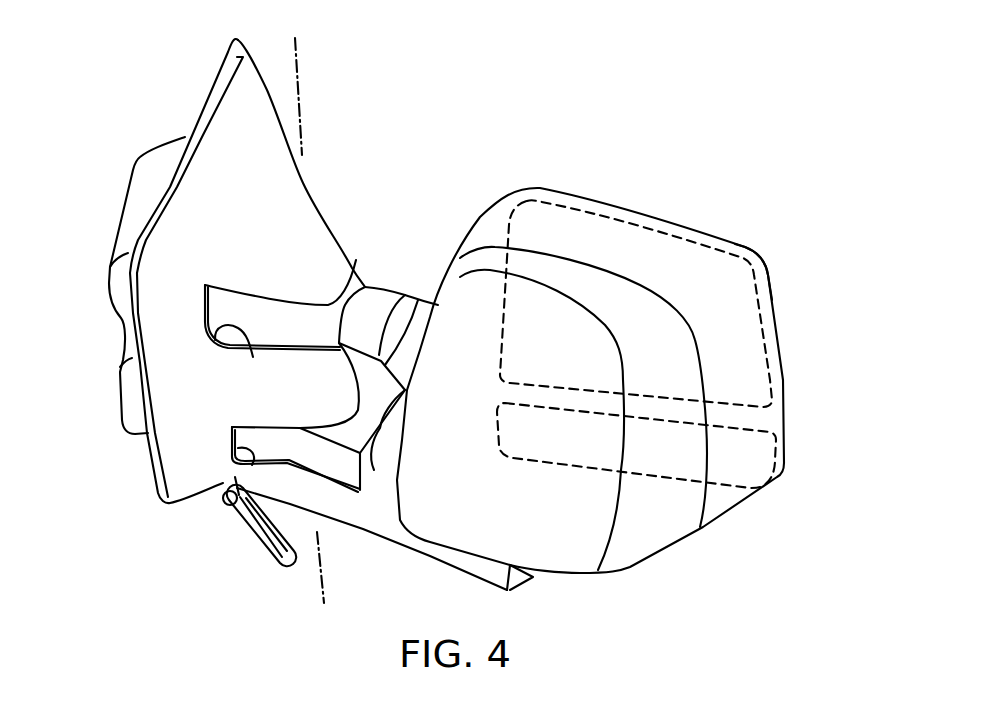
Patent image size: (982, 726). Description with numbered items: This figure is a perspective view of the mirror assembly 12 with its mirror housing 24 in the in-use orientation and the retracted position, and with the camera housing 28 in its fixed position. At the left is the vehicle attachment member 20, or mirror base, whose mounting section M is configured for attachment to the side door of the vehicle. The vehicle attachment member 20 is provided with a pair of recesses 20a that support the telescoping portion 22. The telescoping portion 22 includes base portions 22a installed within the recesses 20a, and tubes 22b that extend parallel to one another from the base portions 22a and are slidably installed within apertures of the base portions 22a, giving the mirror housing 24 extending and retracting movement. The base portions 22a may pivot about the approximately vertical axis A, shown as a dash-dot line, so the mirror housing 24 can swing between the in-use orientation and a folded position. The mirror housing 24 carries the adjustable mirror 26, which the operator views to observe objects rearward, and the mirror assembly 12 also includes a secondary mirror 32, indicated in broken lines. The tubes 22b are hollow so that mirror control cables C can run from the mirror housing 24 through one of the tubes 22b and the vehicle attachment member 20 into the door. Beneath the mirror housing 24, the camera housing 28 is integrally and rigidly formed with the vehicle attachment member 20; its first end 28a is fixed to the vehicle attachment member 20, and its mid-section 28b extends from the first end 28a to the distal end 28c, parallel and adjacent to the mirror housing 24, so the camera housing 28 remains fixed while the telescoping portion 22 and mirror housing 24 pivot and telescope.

The mirror assembly 12 is at (617, 361).
The vehicle attachment member 20 is at (287, 212).
The recesses 20a is at (245, 343).
The telescoping portion 22 is at (383, 288).
The base portions 22a is at (233, 313).
The tubes 22b is at (383, 313).
The mirror housing 24 is at (590, 227).
The adjustable mirror 26 is at (757, 252).
The camera housing 28 is at (359, 552).
The first end 28a is at (223, 506).
The mid-section 28b is at (368, 520).
The distal end 28c is at (525, 575).
The secondary mirror 32 is at (783, 468).
The axis A is at (298, 95).
The mounting section M is at (145, 186).
The mirror control cables C is at (250, 546).